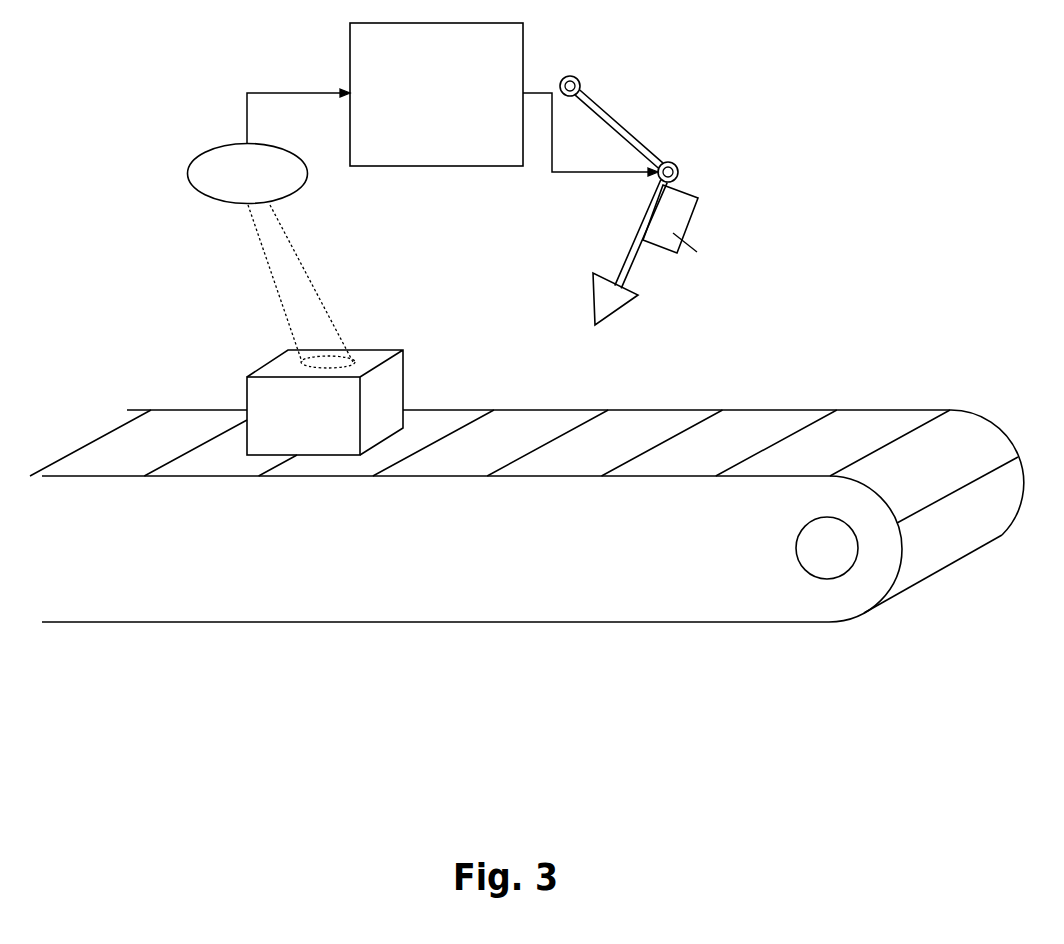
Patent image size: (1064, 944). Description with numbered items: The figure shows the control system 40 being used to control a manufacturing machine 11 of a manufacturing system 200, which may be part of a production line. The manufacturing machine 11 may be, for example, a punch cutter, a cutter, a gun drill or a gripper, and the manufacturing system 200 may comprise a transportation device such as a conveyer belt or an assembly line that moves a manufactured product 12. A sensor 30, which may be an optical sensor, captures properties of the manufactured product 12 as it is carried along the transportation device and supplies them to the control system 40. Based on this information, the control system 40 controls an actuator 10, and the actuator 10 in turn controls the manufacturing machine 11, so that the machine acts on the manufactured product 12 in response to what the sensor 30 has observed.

The control system 40 is at (335, 31).
The sensor 30 is at (187, 178).
The manufacturing machine 11 is at (640, 140).
The actuator 10 is at (695, 217).
The manufactured product 12 is at (410, 382).
The manufacturing system 200 is at (422, 623).